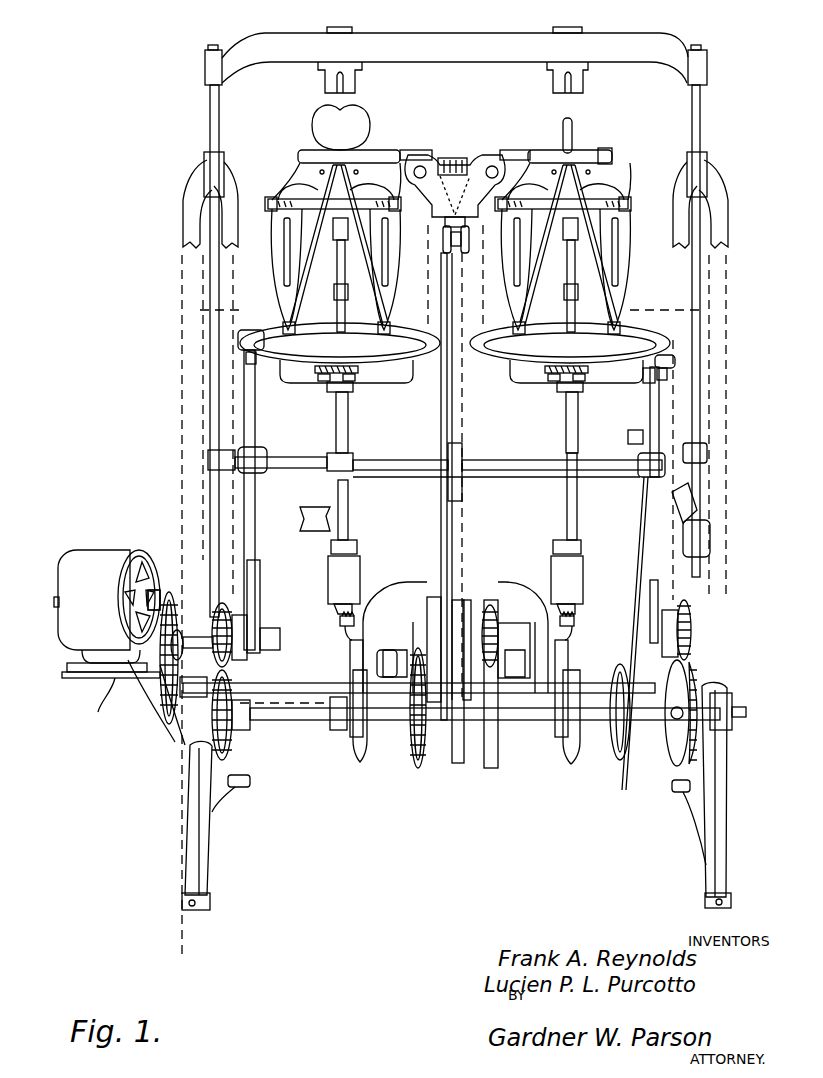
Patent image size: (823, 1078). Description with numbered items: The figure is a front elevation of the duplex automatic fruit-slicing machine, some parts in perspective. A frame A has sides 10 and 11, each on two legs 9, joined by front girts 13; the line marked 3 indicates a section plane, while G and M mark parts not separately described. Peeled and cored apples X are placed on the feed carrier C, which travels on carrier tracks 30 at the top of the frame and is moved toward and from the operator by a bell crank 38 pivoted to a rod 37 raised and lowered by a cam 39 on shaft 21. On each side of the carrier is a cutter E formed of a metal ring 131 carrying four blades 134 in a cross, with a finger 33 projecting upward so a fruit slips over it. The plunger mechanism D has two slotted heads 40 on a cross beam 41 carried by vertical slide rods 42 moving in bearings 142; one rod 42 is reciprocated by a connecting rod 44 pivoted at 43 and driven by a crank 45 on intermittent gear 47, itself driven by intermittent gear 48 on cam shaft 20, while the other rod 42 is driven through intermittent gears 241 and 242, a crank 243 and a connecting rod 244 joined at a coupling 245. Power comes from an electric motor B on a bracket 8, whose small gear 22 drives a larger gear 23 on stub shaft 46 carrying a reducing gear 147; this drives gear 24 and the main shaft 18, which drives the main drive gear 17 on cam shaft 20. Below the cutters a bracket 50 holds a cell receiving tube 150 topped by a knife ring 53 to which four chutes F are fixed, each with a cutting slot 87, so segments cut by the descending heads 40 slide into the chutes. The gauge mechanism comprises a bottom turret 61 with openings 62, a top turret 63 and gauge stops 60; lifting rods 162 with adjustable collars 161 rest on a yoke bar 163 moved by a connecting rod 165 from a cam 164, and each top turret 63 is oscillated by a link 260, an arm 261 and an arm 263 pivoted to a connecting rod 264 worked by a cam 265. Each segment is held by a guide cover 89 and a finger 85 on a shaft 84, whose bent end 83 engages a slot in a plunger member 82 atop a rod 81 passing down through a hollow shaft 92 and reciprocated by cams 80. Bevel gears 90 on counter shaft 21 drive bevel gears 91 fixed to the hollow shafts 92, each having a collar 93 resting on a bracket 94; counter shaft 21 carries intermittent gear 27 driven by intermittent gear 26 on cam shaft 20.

The section line 3 is at (184, 732).
The bracket 8 is at (112, 682).
The legs 9 is at (250, 783).
The frame side 10 is at (182, 235).
The frame side 11 is at (730, 242).
The front girts 13 is at (313, 752).
The main drive gear 17 is at (417, 768).
The main shaft 18 is at (283, 683).
The cam shaft 20 is at (305, 720).
The counter shaft 21 is at (469, 630).
The small gear 22 is at (160, 596).
The larger gear 23 is at (185, 606).
The gear 24 is at (176, 725).
The intermittent gear 26 is at (497, 769).
The intermittent gear 27 is at (493, 604).
The carrier tracks 30 is at (437, 190).
The finger 33 is at (572, 122).
The rod 37 is at (441, 560).
The bell crank 38 is at (443, 250).
The cam 39 is at (432, 612).
The plunger heads 40 is at (356, 78).
The cross beam 41 is at (478, 33).
The vertical slide rods 42 is at (210, 300).
The pivot 43 is at (236, 442).
The connecting rod 44 is at (256, 540).
The crank 45 is at (224, 602).
The stub shaft 46 is at (181, 633).
The intermittent gear 47 is at (194, 672).
The intermittent gear 48 is at (236, 760).
The bracket 50 is at (335, 395).
The knife ring 53 is at (455, 336).
The gauge stops 60 is at (296, 332).
The bottom turret 61 is at (404, 363).
The openings 62 is at (572, 440).
The top turret 63 is at (252, 326).
The cams 80 is at (464, 727).
The rod 81 is at (595, 612).
The plunger member 82 is at (330, 203).
The bent end 83 is at (454, 245).
The shaft 84 is at (278, 210).
The finger 85 is at (638, 262).
The cutting slot 87 is at (406, 314).
The guide cover 89 is at (280, 255).
The bevel gears 90 is at (352, 647).
The bevel gear 91 is at (345, 619).
The hollow shaft 92 is at (348, 291).
The collar 93 is at (581, 545).
The bracket 94 is at (578, 578).
The metal ring 131 is at (298, 156).
The blades 134 is at (580, 150).
The bearings 142 is at (205, 165).
The reducing gear 147 is at (160, 672).
The cell receiving tube 150 is at (327, 383).
The adjustable collar 161 is at (351, 453).
The lifting rods 162 is at (346, 440).
The yoke bar 163 is at (410, 472).
The cam 164 is at (461, 764).
The connecting rod 165 is at (457, 528).
The intermittent gear 241 is at (700, 680).
The intermittent gear 242 is at (694, 636).
The crank 243 is at (694, 620).
The connecting rod 244 is at (700, 592).
The coupling 245 is at (700, 452).
The link 260 is at (244, 362).
The arm 261 is at (256, 418).
The arm 263 is at (628, 440).
The connecting rod 264 is at (638, 586).
The cam 265 is at (621, 760).
The frame A is at (718, 203).
The electric motor B is at (100, 560).
The feed carrier C is at (490, 155).
The plunger mechanism D is at (440, 50).
The slicers or cutters E is at (545, 150).
The chutes F is at (290, 179).
The clamp G is at (240, 346).
The mechanism M is at (440, 290).
The apples X is at (322, 118).